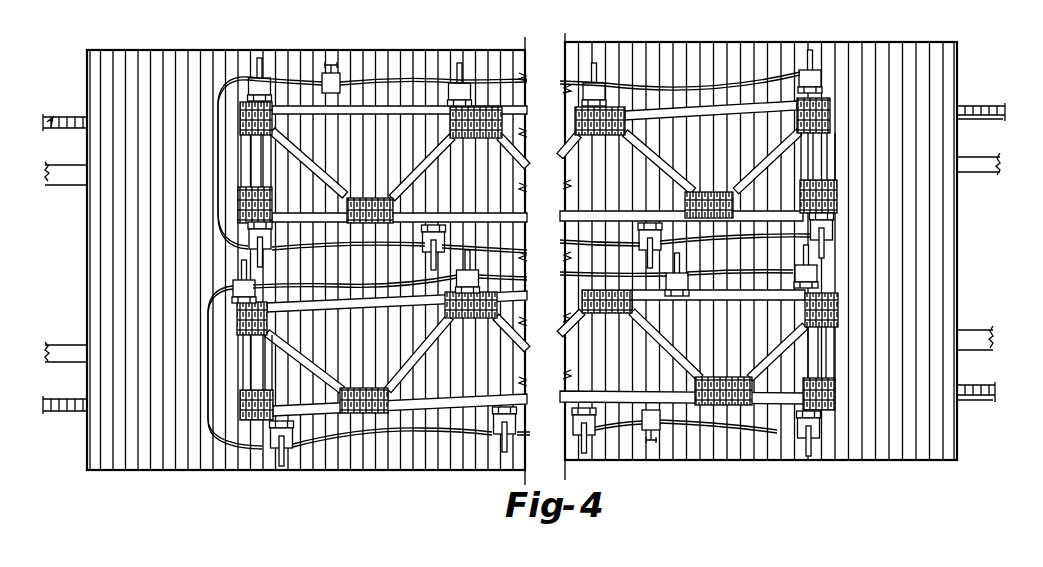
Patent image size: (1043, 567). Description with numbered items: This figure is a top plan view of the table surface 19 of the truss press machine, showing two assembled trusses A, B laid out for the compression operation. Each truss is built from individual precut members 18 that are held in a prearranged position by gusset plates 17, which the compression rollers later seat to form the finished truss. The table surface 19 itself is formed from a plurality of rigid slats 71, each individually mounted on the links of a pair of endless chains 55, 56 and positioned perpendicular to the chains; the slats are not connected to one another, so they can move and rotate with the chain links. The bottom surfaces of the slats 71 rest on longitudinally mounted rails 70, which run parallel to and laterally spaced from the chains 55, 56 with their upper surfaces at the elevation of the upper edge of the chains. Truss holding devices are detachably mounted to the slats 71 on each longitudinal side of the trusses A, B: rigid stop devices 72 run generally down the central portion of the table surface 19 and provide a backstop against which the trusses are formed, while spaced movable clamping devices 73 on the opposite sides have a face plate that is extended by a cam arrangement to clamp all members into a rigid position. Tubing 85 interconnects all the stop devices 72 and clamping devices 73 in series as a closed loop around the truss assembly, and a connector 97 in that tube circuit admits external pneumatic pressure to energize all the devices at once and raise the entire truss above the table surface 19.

The gusset plates 17 is at (537, 259).
The precut members 18 is at (508, 147).
The table surface 19 is at (763, 47).
The endless chain 55 is at (980, 403).
The endless chain 56 is at (993, 100).
The rails 70 is at (982, 165).
The slats 71 is at (928, 50).
The stop devices 72 is at (447, 272).
The movable clamping devices 73 is at (464, 77).
The tubing 85 is at (213, 158).
The connector 97 is at (343, 60).
The truss A is at (693, 107).
The truss B is at (750, 293).